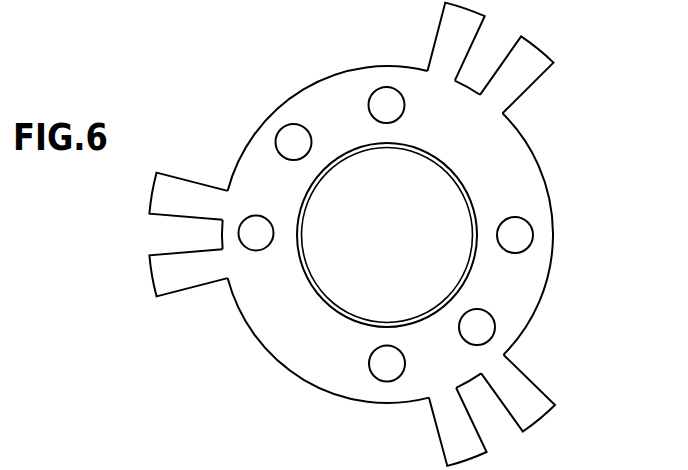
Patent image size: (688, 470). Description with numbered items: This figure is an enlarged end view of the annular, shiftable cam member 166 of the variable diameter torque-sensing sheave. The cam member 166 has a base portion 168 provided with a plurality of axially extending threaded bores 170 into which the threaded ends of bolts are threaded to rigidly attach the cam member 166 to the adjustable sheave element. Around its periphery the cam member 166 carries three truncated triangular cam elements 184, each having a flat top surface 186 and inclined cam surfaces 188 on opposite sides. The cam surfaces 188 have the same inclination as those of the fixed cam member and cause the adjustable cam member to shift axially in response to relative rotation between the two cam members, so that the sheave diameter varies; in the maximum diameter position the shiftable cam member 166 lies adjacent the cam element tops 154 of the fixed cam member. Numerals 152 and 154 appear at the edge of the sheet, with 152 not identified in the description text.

The element (cut off at sheet top) 152 is at (320, 6).
The cam element tops 154 is at (403, 6).
The shiftable cam member 166 is at (547, 175).
The base portion 168 is at (314, 302).
The threaded bores 170 is at (460, 338).
The cam elements 184 is at (540, 50).
The flat top surfaces 186 is at (500, 32).
The inclined cam surfaces 188 is at (181, 190).